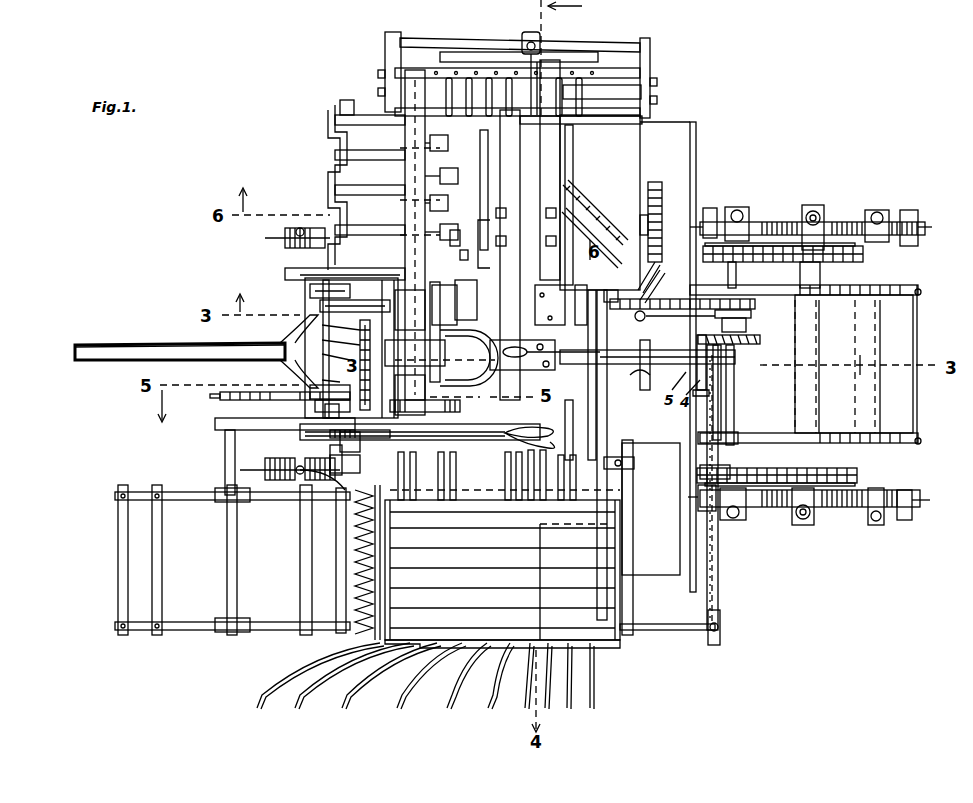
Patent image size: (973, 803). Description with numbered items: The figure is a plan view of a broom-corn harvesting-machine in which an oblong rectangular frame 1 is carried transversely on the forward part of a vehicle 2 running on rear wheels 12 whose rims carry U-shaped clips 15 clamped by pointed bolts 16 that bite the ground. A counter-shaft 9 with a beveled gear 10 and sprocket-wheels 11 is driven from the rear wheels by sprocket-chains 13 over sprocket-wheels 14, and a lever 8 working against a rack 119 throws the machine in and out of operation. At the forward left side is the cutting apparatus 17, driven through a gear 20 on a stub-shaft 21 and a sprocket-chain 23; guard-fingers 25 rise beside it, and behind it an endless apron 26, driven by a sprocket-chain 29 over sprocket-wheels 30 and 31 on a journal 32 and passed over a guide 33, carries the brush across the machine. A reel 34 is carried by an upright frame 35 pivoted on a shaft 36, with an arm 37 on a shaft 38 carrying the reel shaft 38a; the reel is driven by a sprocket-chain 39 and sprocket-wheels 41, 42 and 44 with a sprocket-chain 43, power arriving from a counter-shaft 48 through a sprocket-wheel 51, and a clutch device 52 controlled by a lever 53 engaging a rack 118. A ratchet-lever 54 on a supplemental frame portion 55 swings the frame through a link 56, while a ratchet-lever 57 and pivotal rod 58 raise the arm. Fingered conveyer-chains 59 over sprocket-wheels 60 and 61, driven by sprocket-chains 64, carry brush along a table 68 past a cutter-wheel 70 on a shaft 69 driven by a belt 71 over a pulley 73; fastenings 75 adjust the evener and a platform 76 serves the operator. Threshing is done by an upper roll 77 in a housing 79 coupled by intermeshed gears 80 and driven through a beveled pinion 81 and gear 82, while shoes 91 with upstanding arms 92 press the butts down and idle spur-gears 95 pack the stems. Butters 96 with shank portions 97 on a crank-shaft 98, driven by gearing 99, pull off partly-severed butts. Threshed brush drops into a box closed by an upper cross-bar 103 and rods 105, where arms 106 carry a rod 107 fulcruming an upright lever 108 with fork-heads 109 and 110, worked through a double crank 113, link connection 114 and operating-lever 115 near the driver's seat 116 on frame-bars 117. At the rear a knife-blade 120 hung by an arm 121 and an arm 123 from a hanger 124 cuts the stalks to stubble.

The rectangular frame 1 is at (633, 540).
The vehicle 2 is at (804, 364).
The lever 8 is at (647, 369).
The counter-shaft 9 is at (735, 382).
The beveled gear 10 is at (758, 341).
The sprocket-wheels 11 is at (725, 464).
The rear wheels 12 is at (775, 505).
The sprocket-chains 13 is at (855, 262).
The sprocket-wheels 14 is at (660, 416).
The U-shaped clips 15 is at (890, 482).
The pointed bolts 16 is at (900, 518).
The cutting apparatus 17 is at (350, 575).
The gear 20 is at (250, 365).
The stub-shaft 21 is at (332, 326).
The sprocket-chain 23 is at (327, 354).
The guard-fingers 25 is at (425, 676).
The endless apron 26 is at (502, 574).
The sprocket-chain 29 is at (722, 400).
The sprocket-wheel 30 is at (722, 360).
The sprocket-wheel 31 is at (716, 642).
The journal 32 is at (668, 632).
The guide 33 is at (708, 440).
The reel 34 is at (232, 560).
The upright frame 35 is at (340, 440).
The shaft 36 is at (332, 340).
The arm 37 is at (222, 428).
The shaft 38 is at (334, 472).
The reel shaft 38a is at (218, 462).
The sprocket-chain 39 is at (300, 385).
The sprocket-wheel 41 is at (321, 380).
The sprocket-wheel 42 is at (316, 413).
The sprocket-chain 43 is at (285, 406).
The sprocket-wheel 44 is at (206, 407).
The counter-shaft 48 is at (352, 340).
The sprocket-wheel 51 is at (340, 300).
The clutch device 52 is at (756, 310).
The lever 53 is at (675, 322).
The ratchet-lever 54 is at (429, 404).
The supplemental frame portion 55 is at (530, 432).
The link 56 is at (455, 425).
The ratchet-lever 57 is at (405, 442).
The pivotal rod 58 is at (379, 442).
The fingered conveyer-chains 59 is at (570, 378).
The sprocket-wheels 60 is at (574, 488).
The sprocket-wheels 61 is at (420, 305).
The sprocket-chains 64 is at (510, 470).
The table 68 is at (580, 375).
The shaft 69 is at (443, 239).
The cutter-wheel 70 is at (449, 258).
The belt 71 is at (611, 321).
The pulley 73 is at (410, 339).
The fastenings 75 is at (628, 462).
The platform 76 is at (651, 509).
The upper threshing roll 77 is at (595, 207).
The housing 79 is at (548, 152).
The intermeshed gears 80 is at (662, 268).
The beveled pinion 81 is at (656, 258).
The gear 82 is at (655, 182).
The shoes 91 is at (499, 255).
The upstanding arms 92 is at (483, 190).
The idle spur-gears 95 is at (466, 303).
The butters 96 is at (448, 132).
The shank portions 97 is at (378, 145).
The crank-shaft 98 is at (336, 175).
The gearing 99 is at (305, 287).
The upper cross-bar 103 is at (622, 72).
The rods 105 is at (432, 70).
The arms 106 is at (388, 44).
The rod 107 is at (430, 40).
The upright lever 108 is at (532, 32).
The upper fork-head 109 is at (478, 54).
The lower fork-head 110 is at (590, 92).
The double crank 113 is at (526, 228).
The link connection 114 is at (542, 60).
The operating-lever 115 is at (517, 244).
The driver's seat 116 is at (441, 358).
The frame-bars 117 is at (509, 271).
The rack 118 is at (555, 305).
The rack 119 is at (651, 369).
The knife-blade 120 is at (850, 359).
The arm 121 is at (837, 371).
The arm 123 is at (895, 371).
The hanger 124 is at (916, 290).